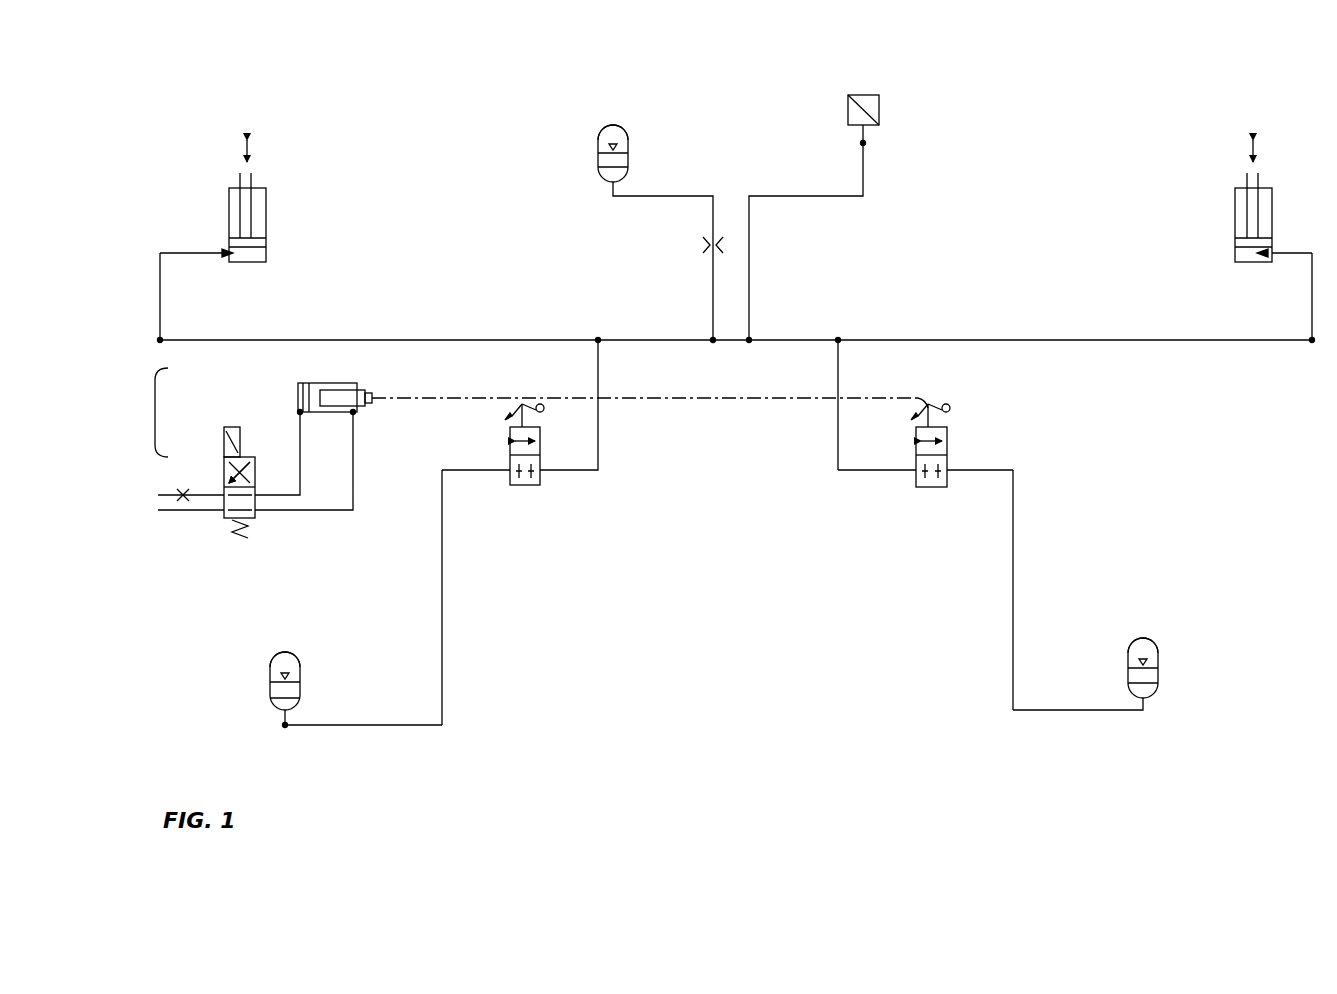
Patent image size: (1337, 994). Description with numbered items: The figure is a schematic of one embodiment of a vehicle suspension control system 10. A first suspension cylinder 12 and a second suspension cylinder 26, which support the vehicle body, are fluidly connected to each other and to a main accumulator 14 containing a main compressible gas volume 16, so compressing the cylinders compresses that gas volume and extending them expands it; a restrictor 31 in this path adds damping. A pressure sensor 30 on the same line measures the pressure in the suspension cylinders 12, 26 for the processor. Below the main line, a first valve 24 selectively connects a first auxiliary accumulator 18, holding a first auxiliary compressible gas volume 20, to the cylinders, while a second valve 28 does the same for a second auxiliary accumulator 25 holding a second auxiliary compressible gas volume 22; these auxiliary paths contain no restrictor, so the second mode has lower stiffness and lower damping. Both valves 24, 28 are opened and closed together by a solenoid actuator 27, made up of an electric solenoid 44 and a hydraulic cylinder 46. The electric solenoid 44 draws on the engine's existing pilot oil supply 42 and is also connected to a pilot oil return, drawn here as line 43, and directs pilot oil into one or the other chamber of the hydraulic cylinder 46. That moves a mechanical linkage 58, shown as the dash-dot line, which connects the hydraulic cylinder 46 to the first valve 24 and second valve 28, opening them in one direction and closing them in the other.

The vehicle suspension control system 10 is at (452, 126).
The first suspension cylinder 12 is at (267, 217).
The main accumulator 14 is at (618, 124).
The main compressible gas volume 16 is at (607, 141).
The first auxiliary accumulator 18 is at (298, 656).
The first auxiliary compressible gas volume 20 is at (282, 665).
The second auxiliary compressible gas volume 22 is at (1137, 650).
The first valve 24 is at (525, 487).
The second auxiliary accumulator 25 is at (1150, 641).
The second suspension cylinder 26 is at (1235, 222).
The solenoid actuator 27 is at (155, 418).
The second valve 28 is at (935, 488).
The pressure sensor 30 is at (880, 102).
The restrictor 31 is at (700, 245).
The pilot oil supply 42 is at (182, 513).
The orifice 43 is at (163, 496).
The electric solenoid 44 is at (224, 470).
The hydraulic cylinder 46 is at (297, 400).
The mechanical linkage 58 is at (727, 402).